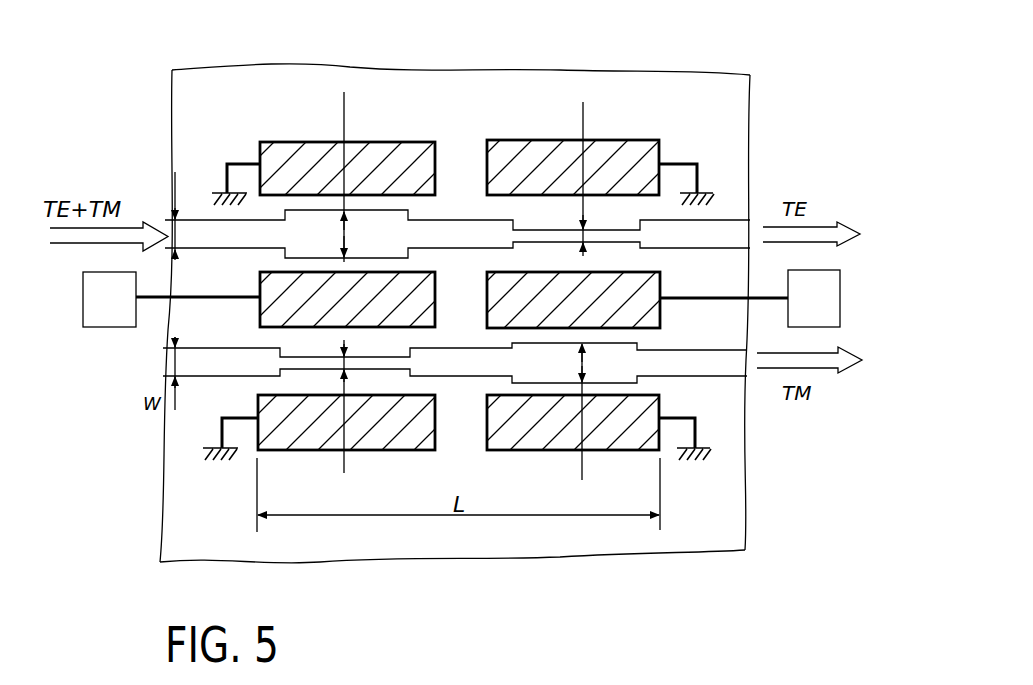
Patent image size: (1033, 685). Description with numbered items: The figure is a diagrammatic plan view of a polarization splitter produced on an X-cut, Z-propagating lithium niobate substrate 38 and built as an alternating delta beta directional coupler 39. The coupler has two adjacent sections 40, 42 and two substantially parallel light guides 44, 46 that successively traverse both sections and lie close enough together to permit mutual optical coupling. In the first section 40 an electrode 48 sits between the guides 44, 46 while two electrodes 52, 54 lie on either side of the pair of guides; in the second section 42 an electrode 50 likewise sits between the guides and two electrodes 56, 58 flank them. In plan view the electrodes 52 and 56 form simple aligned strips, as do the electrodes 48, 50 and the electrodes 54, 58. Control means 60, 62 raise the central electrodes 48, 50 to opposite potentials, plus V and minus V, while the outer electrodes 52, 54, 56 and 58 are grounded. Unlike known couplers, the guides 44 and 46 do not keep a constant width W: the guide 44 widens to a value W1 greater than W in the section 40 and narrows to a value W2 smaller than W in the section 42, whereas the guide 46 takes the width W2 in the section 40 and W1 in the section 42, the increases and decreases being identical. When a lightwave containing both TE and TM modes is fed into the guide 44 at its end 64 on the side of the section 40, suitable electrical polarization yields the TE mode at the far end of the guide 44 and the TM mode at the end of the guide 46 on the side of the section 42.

The substrate 38 is at (737, 124).
The alternating delta beta directional coupler 39 is at (665, 69).
The first section 40 is at (313, 103).
The second section 42 is at (552, 113).
The light guide 44 is at (253, 251).
The light guide 46 is at (217, 378).
The electrode 48 is at (263, 308).
The electrode 50 is at (653, 305).
The electrode 52 is at (277, 150).
The electrode 54 is at (283, 443).
The electrode 56 is at (652, 148).
The electrode 58 is at (648, 407).
The control means 60 is at (125, 327).
The control means 62 is at (825, 325).
The end of guide 64 is at (198, 223).